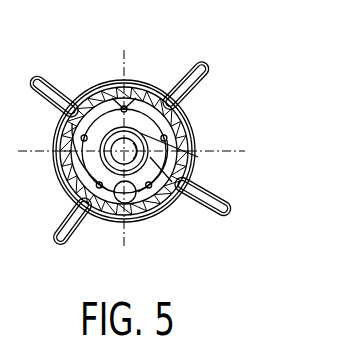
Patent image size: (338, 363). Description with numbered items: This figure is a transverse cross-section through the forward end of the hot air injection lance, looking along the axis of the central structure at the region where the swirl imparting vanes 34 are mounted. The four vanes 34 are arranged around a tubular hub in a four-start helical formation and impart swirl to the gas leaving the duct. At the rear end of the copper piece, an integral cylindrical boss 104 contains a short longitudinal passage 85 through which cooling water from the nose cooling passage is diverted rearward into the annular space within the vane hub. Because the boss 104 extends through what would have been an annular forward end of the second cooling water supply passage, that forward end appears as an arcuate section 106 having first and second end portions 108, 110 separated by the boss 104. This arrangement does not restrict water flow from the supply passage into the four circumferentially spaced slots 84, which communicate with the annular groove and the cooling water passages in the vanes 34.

The swirl imparting vanes 34 is at (40, 72).
The circumferentially spaced slots 84 is at (88, 88).
The short longitudinal passage 85 is at (110, 215).
The cylindrical boss 104 is at (187, 153).
The arcuate section 106 is at (114, 97).
The first end portion 108 is at (60, 137).
The second end portion 110 is at (162, 217).